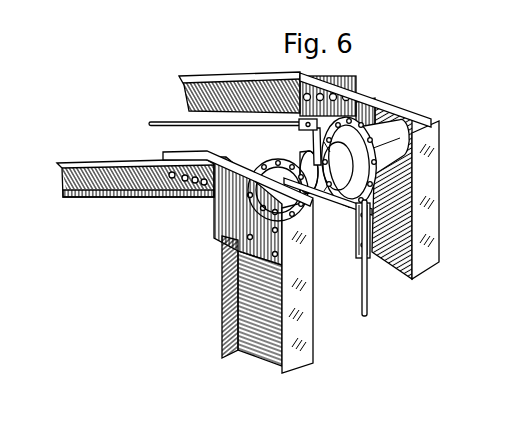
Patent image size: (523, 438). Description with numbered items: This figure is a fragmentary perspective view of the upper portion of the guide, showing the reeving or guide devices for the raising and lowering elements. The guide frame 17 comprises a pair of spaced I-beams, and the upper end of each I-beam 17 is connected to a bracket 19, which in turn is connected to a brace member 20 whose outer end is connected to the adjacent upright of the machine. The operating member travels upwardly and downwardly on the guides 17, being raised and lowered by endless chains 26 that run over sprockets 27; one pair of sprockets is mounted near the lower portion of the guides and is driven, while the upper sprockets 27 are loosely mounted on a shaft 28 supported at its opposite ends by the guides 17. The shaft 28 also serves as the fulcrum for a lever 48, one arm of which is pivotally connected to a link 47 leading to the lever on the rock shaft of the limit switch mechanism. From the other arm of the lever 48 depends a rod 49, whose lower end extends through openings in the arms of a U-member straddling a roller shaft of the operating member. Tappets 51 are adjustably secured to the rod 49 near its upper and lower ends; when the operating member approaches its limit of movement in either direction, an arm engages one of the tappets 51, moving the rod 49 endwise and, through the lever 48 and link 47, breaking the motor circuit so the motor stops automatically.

The guide frame 17 is at (432, 246).
The bracket 19 is at (361, 84).
The brace member 20 is at (200, 79).
The chain 26 is at (273, 163).
The sprocket 27 is at (258, 162).
The shaft 28 is at (232, 221).
The link 47 is at (152, 123).
The lever 48 is at (315, 164).
The rod 49 is at (369, 302).
The tappets 51 is at (357, 257).